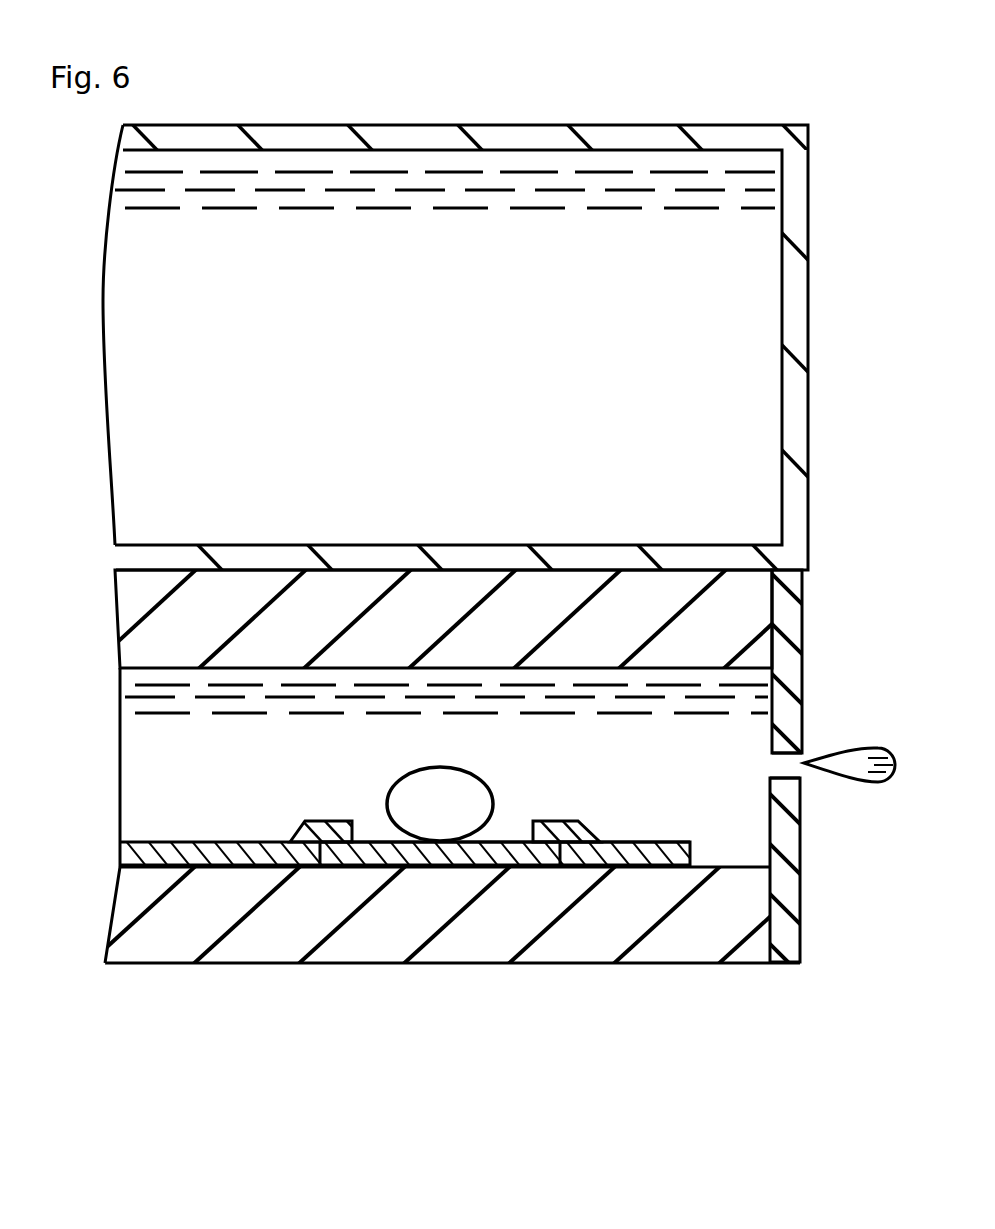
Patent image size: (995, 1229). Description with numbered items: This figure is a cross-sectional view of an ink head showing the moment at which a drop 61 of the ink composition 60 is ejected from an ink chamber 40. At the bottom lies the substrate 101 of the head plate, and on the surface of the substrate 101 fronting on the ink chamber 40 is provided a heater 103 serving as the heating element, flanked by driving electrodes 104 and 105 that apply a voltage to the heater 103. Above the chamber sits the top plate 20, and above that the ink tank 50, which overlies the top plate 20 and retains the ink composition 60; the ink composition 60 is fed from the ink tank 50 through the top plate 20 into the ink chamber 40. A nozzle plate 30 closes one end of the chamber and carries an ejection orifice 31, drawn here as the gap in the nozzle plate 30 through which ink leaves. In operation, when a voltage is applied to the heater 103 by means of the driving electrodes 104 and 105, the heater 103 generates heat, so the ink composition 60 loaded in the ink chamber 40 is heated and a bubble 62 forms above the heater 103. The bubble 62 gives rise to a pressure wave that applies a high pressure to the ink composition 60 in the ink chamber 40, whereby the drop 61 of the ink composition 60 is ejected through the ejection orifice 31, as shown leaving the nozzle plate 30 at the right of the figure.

The top plate 20 is at (157, 633).
The nozzle plate 30 is at (793, 631).
The ejection orifice 31 is at (805, 764).
The ink chamber 40 is at (118, 752).
The ink tank 50 is at (797, 333).
The ink composition 60 is at (117, 360).
The drop 61 is at (893, 784).
The bubble 62 is at (475, 793).
The substrate 101 is at (153, 932).
The heater 103 is at (435, 855).
The driving electrode 104 is at (205, 860).
The driving electrode 105 is at (625, 855).